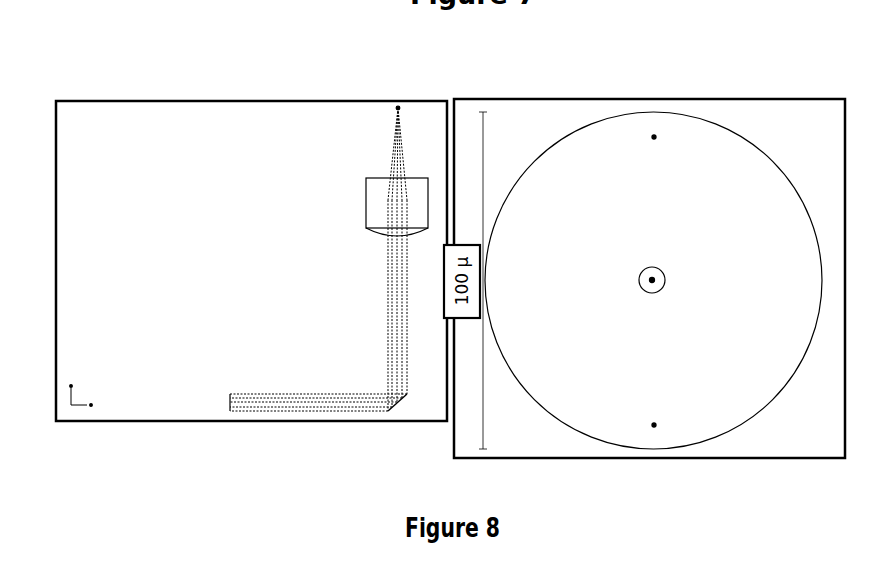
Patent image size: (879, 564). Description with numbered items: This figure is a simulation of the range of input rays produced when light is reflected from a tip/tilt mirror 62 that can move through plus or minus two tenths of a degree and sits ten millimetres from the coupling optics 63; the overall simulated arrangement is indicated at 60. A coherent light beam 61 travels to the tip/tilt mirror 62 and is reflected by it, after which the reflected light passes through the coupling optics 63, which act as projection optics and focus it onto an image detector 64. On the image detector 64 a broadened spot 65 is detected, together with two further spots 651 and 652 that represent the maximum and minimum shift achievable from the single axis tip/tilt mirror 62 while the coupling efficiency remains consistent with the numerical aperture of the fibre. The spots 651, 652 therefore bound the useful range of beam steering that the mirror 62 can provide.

The optical assembly 60 is at (288, 78).
The coherent light beam 61 is at (307, 432).
The tip/tilt mirror 62 is at (419, 430).
The coupling optics 63 is at (368, 209).
The image detector 64 is at (367, 153).
The broadened spot 65 is at (620, 294).
The spot 651 is at (615, 153).
The spot 652 is at (615, 442).